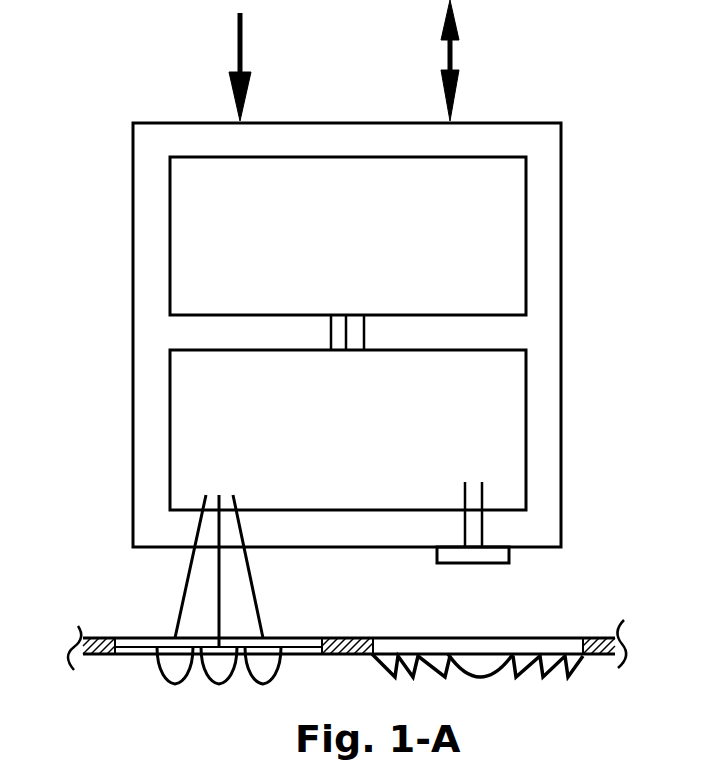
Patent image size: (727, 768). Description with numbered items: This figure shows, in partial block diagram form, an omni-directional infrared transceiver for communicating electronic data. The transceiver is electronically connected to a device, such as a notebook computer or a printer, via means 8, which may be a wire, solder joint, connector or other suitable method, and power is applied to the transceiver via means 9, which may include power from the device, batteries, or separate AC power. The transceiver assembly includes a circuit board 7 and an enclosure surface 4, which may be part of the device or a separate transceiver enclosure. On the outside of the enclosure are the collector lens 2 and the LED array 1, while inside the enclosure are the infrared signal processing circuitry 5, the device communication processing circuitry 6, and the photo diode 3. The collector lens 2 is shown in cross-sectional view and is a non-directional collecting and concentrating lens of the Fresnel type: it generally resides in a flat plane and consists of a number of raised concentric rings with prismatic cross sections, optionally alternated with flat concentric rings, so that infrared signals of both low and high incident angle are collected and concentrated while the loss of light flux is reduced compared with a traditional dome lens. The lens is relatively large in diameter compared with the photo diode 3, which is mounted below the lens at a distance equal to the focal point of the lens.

The LED array 1 is at (165, 672).
The collector lens 2 is at (567, 672).
The photo diode 3 is at (505, 563).
The enclosure surface 4 is at (105, 637).
The infrared signal processing circuitry 5 is at (526, 393).
The device communication processing circuitry 6 is at (526, 230).
The circuit board 7 is at (540, 122).
The means for electronic connection to a device 8 is at (485, 43).
The means for applying power 9 is at (213, 45).